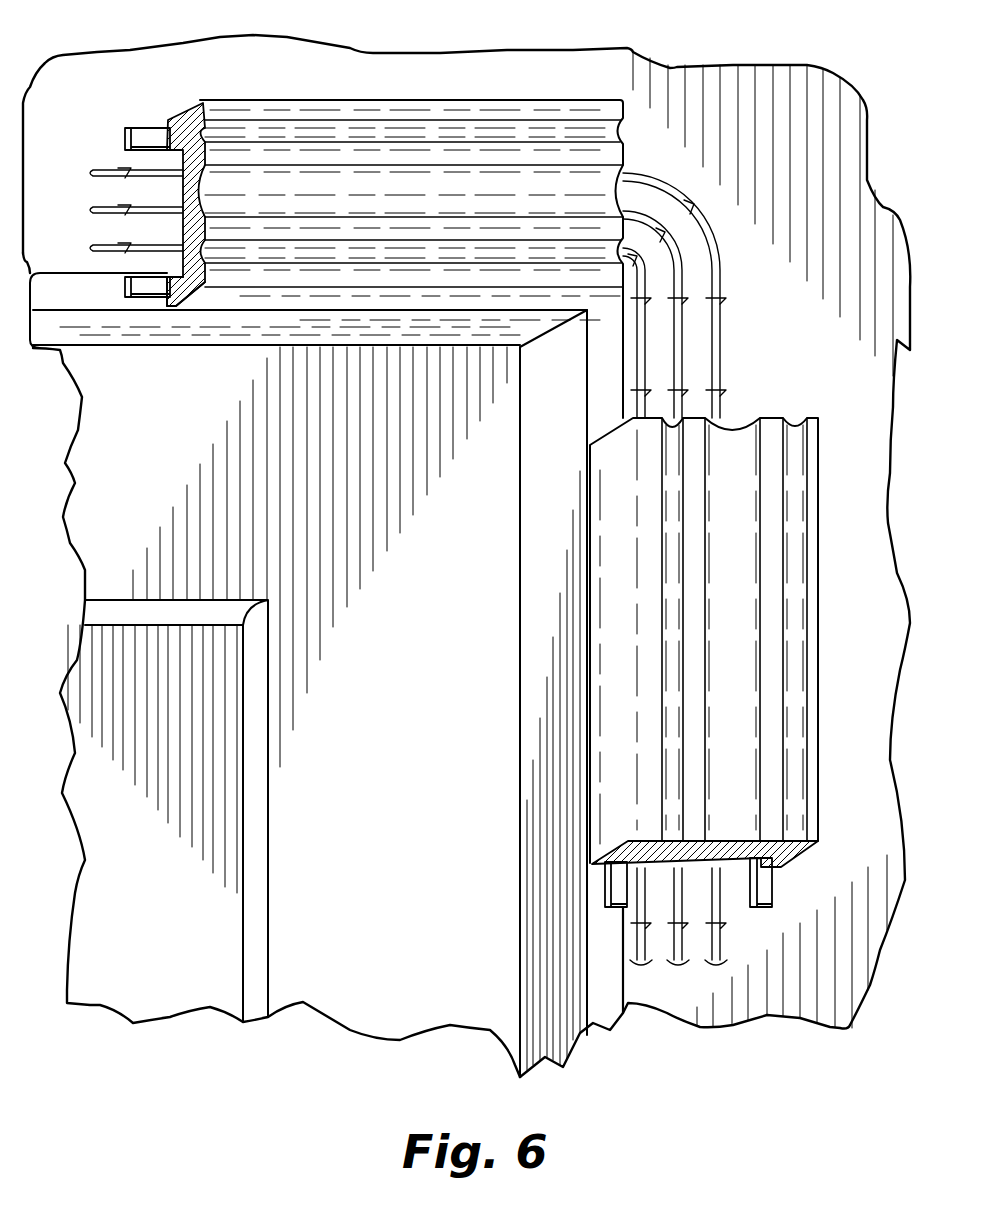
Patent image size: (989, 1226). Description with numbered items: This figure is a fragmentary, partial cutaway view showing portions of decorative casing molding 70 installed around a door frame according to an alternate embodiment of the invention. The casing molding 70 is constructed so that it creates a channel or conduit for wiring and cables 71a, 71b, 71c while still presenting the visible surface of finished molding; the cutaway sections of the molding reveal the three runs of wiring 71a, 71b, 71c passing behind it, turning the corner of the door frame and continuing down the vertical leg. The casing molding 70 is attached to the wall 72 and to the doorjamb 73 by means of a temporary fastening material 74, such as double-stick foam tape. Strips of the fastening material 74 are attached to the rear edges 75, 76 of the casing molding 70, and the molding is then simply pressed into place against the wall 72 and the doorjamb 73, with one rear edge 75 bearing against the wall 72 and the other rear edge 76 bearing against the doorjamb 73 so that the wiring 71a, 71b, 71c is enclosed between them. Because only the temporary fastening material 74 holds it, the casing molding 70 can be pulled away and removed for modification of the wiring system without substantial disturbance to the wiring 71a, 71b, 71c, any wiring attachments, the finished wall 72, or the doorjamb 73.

The casing molding 70 is at (500, 100).
The wiring and cables 71a is at (105, 172).
The wiring and cables 71b is at (92, 210).
The wiring and cables 71c is at (92, 250).
The wall 72 is at (878, 392).
The doorjamb 73 is at (520, 618).
The temporary fastening material 74 is at (122, 137).
The rear edge of casing molding 75 is at (172, 112).
The rear edge of casing molding 76 is at (182, 303).